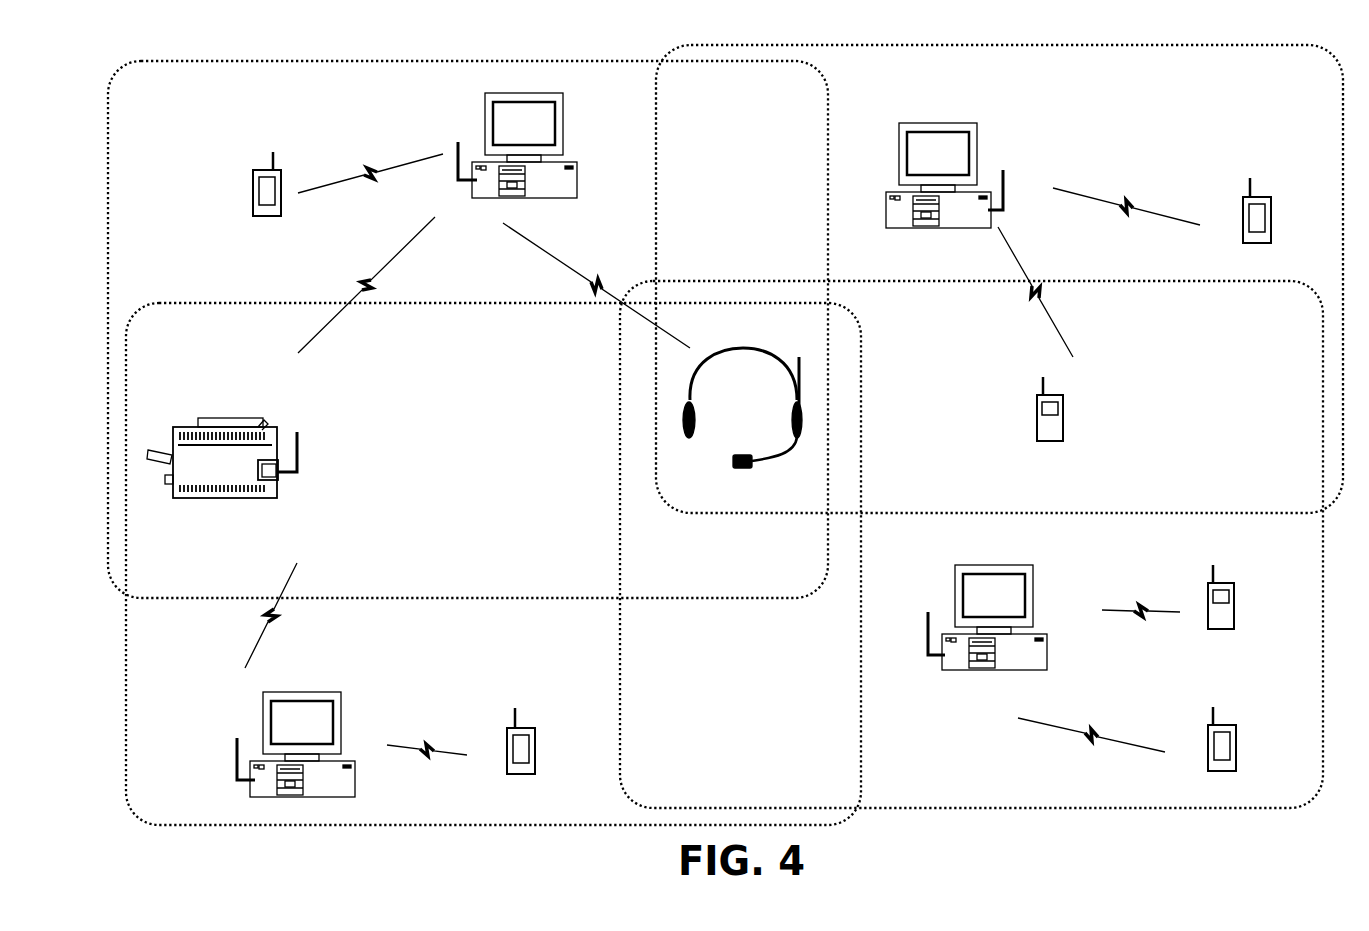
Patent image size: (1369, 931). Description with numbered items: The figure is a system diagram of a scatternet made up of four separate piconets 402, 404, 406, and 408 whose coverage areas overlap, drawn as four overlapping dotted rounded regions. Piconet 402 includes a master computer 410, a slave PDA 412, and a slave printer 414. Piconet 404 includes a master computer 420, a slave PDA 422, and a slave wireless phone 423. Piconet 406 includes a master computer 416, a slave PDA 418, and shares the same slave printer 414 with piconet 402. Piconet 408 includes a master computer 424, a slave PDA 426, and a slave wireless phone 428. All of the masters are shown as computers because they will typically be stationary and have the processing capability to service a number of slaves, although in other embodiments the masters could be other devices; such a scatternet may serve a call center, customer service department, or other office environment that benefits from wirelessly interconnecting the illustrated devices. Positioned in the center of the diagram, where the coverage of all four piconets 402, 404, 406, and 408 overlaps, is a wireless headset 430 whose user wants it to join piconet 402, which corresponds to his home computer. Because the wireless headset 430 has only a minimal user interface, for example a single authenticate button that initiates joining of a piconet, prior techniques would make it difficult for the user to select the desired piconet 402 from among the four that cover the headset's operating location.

The piconet 402 is at (323, 62).
The piconet 404 is at (1162, 45).
The piconet 406 is at (127, 690).
The piconet 408 is at (900, 808).
The master (computer) 410 is at (563, 142).
The slave (PDA) 412 is at (253, 200).
The slave (printer) 414 is at (266, 433).
The master (computer) 416 is at (313, 692).
The slave (PDA) 418 is at (537, 762).
The master (computer) 420 is at (953, 123).
The slave (PDA) 422 is at (1272, 230).
The slave (wireless phone) 423 is at (1064, 430).
The master (computer) 424 is at (982, 565).
The slave (PDA) 426 is at (1236, 760).
The slave (wireless phone) 428 is at (1236, 618).
The wireless headset 430 is at (745, 350).